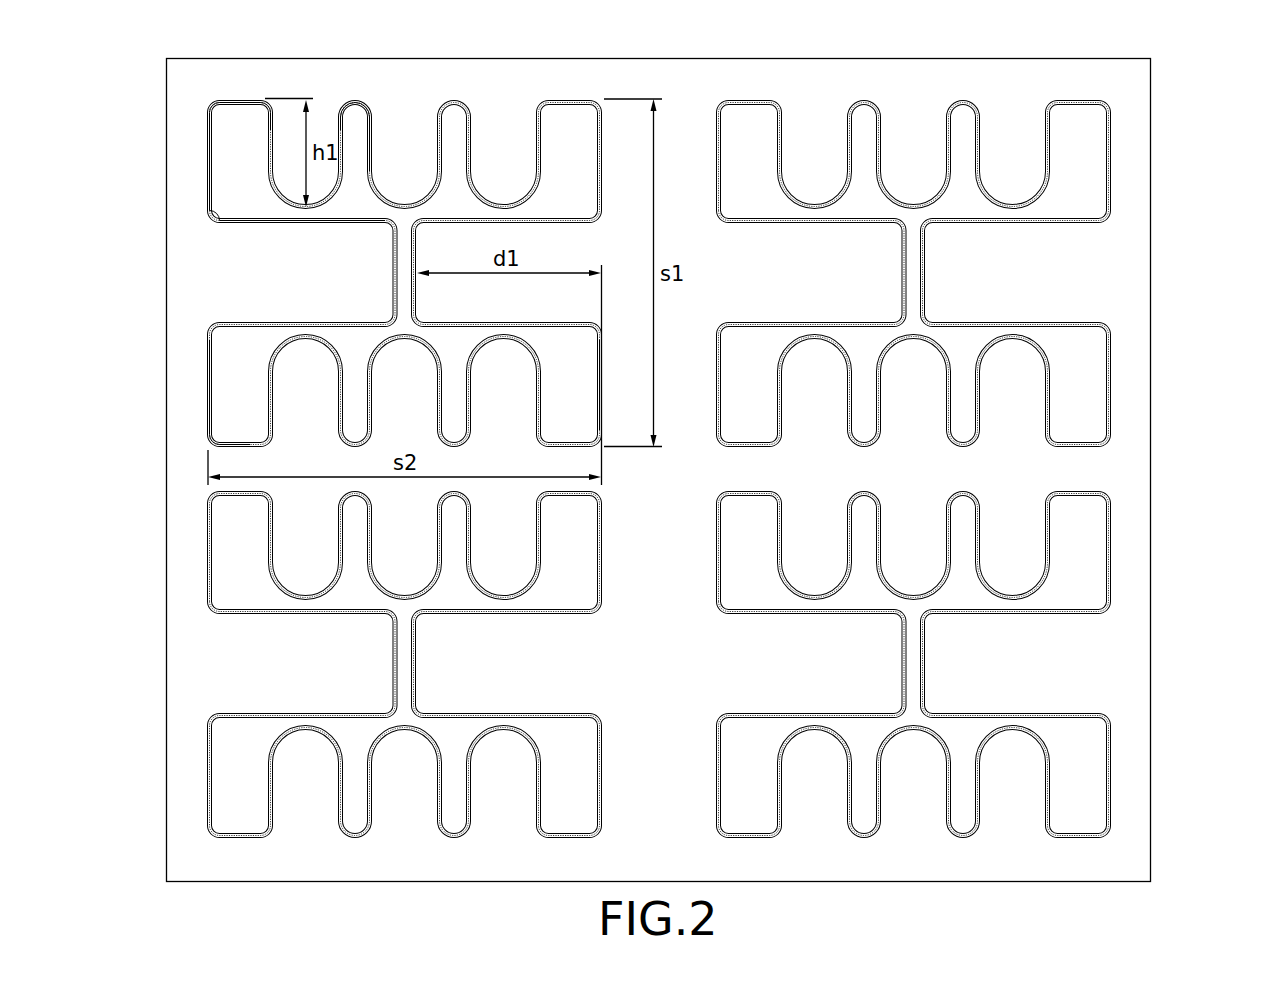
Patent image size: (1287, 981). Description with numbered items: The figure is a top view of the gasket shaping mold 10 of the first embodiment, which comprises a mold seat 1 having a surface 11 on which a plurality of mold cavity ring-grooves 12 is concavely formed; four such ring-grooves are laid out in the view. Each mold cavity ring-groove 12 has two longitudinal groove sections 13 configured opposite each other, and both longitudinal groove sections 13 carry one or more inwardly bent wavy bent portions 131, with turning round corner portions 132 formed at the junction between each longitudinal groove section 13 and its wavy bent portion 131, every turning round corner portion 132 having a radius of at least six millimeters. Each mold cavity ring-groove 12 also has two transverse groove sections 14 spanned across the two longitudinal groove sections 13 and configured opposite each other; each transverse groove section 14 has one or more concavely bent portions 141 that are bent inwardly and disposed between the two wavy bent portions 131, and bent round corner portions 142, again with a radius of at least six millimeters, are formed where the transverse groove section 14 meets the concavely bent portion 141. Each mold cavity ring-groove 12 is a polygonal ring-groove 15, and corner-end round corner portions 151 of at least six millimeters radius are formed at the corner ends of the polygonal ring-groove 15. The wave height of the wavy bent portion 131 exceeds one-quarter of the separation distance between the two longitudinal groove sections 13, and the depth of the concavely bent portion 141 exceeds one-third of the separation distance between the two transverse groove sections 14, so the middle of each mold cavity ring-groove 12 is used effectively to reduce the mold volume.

The mold seat 1 is at (714, 470).
The gasket shaping mold 10 is at (658, 425).
The surface 11 is at (1120, 489).
The mold cavity ring-groove 12 is at (191, 327).
The longitudinal groove section 13 is at (250, 99).
The wavy bent portion 131 is at (372, 147).
The turning round corner portion 132 is at (357, 99).
The transverse groove section 14 is at (208, 170).
The concavely bent portion 141 is at (302, 223).
The bent round corner portion 142 is at (208, 218).
The polygonal ring-groove 15 is at (196, 377).
The corner-end round corner portion 151 is at (213, 110).